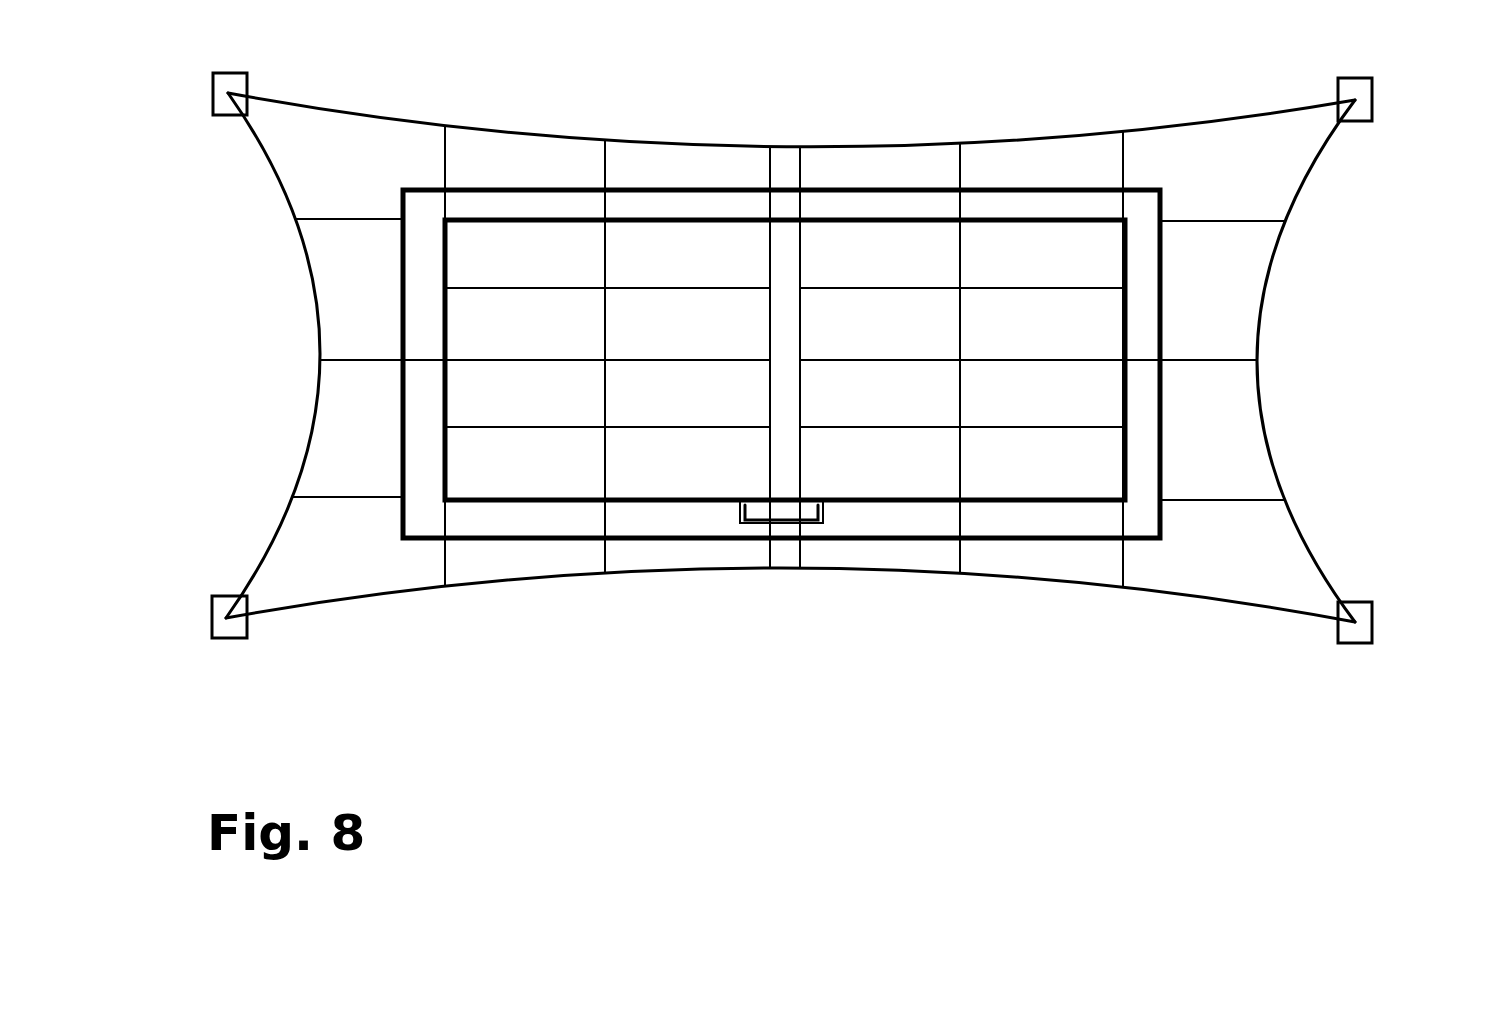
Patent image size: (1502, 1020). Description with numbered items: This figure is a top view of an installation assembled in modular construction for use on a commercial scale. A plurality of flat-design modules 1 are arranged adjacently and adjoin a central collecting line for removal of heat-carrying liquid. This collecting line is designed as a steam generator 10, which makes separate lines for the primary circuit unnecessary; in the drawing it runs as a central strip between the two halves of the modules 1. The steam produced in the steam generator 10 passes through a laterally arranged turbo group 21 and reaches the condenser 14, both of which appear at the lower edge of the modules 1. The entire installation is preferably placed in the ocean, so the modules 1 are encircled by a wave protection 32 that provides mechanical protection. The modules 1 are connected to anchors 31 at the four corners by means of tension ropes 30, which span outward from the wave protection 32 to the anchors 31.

The module 1 is at (475, 242).
The steam generator 10 is at (782, 382).
The condenser 14 is at (747, 523).
The turbo group 21 is at (808, 512).
The tension ropes 30 is at (1218, 362).
The anchors 31 is at (1368, 122).
The wave protection 32 is at (1162, 525).